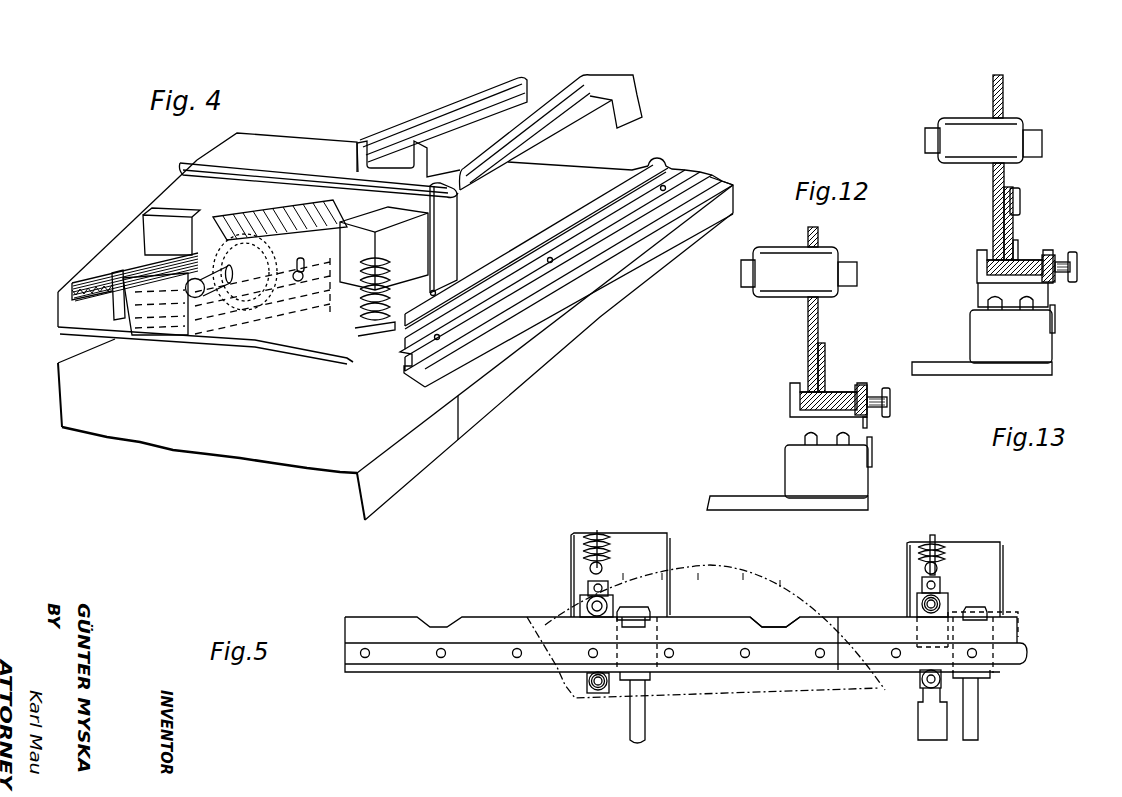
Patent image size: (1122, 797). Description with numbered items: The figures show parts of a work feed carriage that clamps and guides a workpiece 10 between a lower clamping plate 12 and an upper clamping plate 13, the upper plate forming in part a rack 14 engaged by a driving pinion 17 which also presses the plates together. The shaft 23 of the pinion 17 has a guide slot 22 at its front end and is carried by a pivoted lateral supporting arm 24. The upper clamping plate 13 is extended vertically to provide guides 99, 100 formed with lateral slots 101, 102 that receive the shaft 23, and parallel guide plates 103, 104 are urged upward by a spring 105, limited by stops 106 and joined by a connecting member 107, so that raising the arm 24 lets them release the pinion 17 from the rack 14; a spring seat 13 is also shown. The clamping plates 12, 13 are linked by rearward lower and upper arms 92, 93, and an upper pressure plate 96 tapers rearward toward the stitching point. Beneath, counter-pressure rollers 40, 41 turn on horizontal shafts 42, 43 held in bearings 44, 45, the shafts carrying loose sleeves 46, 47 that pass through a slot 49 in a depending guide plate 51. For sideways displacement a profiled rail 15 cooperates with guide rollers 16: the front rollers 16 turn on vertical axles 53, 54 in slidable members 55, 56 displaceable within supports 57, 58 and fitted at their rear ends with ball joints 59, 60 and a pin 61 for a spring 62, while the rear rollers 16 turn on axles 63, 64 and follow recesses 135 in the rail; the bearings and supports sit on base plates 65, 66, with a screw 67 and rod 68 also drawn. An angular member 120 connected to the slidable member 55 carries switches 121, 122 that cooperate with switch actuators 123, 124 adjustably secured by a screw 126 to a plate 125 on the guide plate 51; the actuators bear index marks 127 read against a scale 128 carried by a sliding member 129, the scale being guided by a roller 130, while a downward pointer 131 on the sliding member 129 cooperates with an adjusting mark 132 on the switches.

In FIG. 5, the workpiece 10 is at (800, 607).
In FIG. 5, the lower clamping plate 12 is at (385, 650).
In FIG. 4, the upper clamping plate 13 is at (390, 298).
In FIG. 4, the rack 14 is at (137, 262).
In FIG. 5, the profiled rail 15 is at (502, 625).
In FIG. 5, the guide rollers 16 is at (597, 692).
In FIG. 4, the pinion 17 is at (293, 197).
In FIG. 4, the guide slot 22 is at (204, 297).
In FIG. 4, the shaft 23 is at (560, 122).
In FIG. 4, the supporting arm 24 is at (467, 108).
In FIG. 5, the counter-pressure roller 40 is at (992, 614).
In FIG. 5, the counter-pressure roller 41 is at (659, 612).
In FIG. 12, the horizontal shaft 42 is at (847, 277).
In FIG. 13, the horizontal shaft 42 is at (1033, 142).
In FIG. 5, the horizontal shaft 42 is at (985, 609).
In FIG. 5, the horizontal shaft 43 is at (620, 620).
In FIG. 5, the bearing 44 is at (987, 674).
In FIG. 5, the bearing 45 is at (657, 680).
In FIG. 12, the sleeve 46 is at (780, 270).
In FIG. 13, the sleeve 46 is at (973, 133).
In FIG. 5, the sleeve 46 is at (981, 714).
In FIG. 5, the sleeve 47 is at (640, 715).
In FIG. 12, the slot 49 is at (820, 300).
In FIG. 13, the slot 49 is at (992, 168).
In FIG. 12, the guide plate 51 is at (808, 345).
In FIG. 13, the guide plate 51 is at (993, 218).
In FIG. 5, the vertical axle 53 is at (868, 679).
In FIG. 5, the vertical axle 54 is at (585, 687).
In FIG. 5, the slidable member 55 is at (942, 585).
In FIG. 5, the slidable member 56 is at (605, 590).
In FIG. 5, the support 57 is at (948, 603).
In FIG. 5, the support 58 is at (583, 607).
In FIG. 5, the ball joint 59 is at (924, 565).
In FIG. 5, the ball joint 60 is at (589, 566).
In FIG. 5, the pin 61 is at (604, 585).
In FIG. 5, the spring 62 is at (593, 535).
In FIG. 5, the axle 63 is at (920, 604).
In FIG. 5, the axle 64 is at (625, 610).
In FIG. 5, the base plate 65 is at (987, 553).
In FIG. 5, the base plate 66 is at (648, 537).
In FIG. 5, the screw 67 is at (935, 536).
In FIG. 5, the rod 68 is at (602, 533).
In FIG. 4, the lower arm 92 is at (515, 365).
In FIG. 4, the upper arm 93 is at (668, 187).
In FIG. 4, the upper pressure plate 96 is at (563, 185).
In FIG. 4, the guide 99 is at (207, 223).
In FIG. 4, the guide 100 is at (447, 247).
In FIG. 4, the lateral slot 101 is at (215, 258).
In FIG. 4, the lateral slot 102 is at (195, 182).
In FIG. 4, the guide plate 103 is at (113, 277).
In FIG. 4, the guide plate 104 is at (165, 235).
In FIG. 4, the spring 105 is at (377, 282).
In FIG. 4, the stop 106 is at (300, 282).
In FIG. 4, the connecting member 107 is at (387, 222).
In FIG. 12, the angular member 120 is at (772, 503).
In FIG. 13, the angular member 120 is at (982, 372).
In FIG. 12, the switch 121 is at (840, 432).
In FIG. 13, the switch 121 is at (1033, 302).
In FIG. 12, the switch 122 is at (795, 446).
In FIG. 13, the switch 122 is at (975, 311).
In FIG. 13, the switch actuator 123 is at (985, 290).
In FIG. 13, the switch actuator 124 is at (983, 300).
In FIG. 12, the plate 125 is at (867, 387).
In FIG. 13, the plate 125 is at (1027, 263).
In FIG. 12, the screw 126 is at (890, 401).
In FIG. 13, the screw 126 is at (1073, 255).
In FIG. 13, the index mark 127 is at (1015, 247).
In FIG. 12, the scale 128 is at (823, 362).
In FIG. 13, the scale 128 is at (1010, 230).
In FIG. 12, the sliding member 129 is at (800, 400).
In FIG. 13, the roller 130 is at (1015, 198).
In FIG. 12, the pointer 131 is at (867, 421).
In FIG. 12, the adjusting mark 132 is at (873, 451).
In FIG. 13, the adjusting mark 132 is at (1057, 327).
In FIG. 5, the recess 135 is at (442, 625).